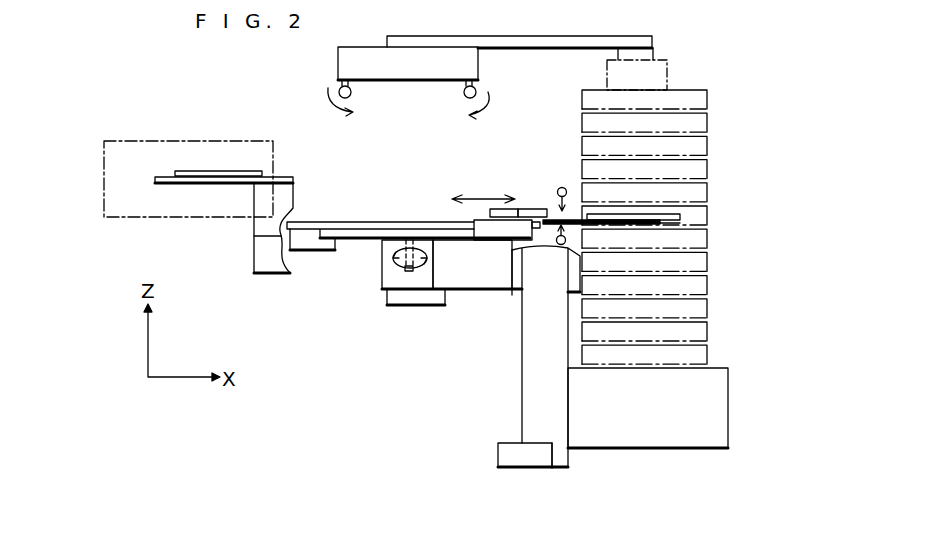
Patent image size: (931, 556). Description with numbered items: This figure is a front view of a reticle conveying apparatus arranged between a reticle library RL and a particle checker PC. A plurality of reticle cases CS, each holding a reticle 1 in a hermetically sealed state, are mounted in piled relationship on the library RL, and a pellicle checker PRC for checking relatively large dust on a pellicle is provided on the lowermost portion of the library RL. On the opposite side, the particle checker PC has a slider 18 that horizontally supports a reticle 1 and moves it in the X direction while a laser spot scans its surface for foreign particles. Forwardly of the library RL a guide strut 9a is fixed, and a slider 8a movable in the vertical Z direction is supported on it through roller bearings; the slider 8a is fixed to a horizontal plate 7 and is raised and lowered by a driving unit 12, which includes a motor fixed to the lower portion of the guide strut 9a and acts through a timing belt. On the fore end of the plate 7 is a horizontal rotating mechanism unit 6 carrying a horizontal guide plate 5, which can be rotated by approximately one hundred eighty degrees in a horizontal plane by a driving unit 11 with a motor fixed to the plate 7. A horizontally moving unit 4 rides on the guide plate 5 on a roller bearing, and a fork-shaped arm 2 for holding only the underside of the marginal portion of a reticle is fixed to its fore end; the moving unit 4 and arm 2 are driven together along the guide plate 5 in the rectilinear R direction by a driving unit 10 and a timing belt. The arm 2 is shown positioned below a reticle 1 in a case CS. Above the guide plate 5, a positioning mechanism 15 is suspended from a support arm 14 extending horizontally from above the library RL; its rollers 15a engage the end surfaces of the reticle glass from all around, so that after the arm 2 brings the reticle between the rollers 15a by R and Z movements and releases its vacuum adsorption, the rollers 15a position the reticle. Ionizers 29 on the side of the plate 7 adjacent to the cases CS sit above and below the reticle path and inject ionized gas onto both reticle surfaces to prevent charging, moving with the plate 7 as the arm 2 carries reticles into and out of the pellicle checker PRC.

The reticle 1 is at (190, 170).
The fork-shaped arm 2 is at (577, 219).
The horizontally moving unit 4 is at (478, 228).
The horizontal guide plate 5 is at (320, 222).
The horizontal rotating mechanism unit 6 is at (388, 267).
The horizontal plate 7 is at (458, 291).
The slider 8a is at (515, 296).
The guide strut 9a is at (560, 466).
The driving unit 10 is at (313, 240).
The driving unit 11 is at (415, 306).
The driving unit 12 is at (517, 468).
The support arm 14 is at (622, 38).
The positioning mechanism 15 is at (340, 63).
The rollers 15a is at (462, 98).
The slider 18 is at (291, 182).
The ionizers 29 is at (557, 237).
The particle checker PC is at (126, 140).
The reticle library RL is at (668, 78).
The reticle case CS is at (707, 101).
The pellicle checker PRC is at (713, 375).
The R direction R is at (498, 197).